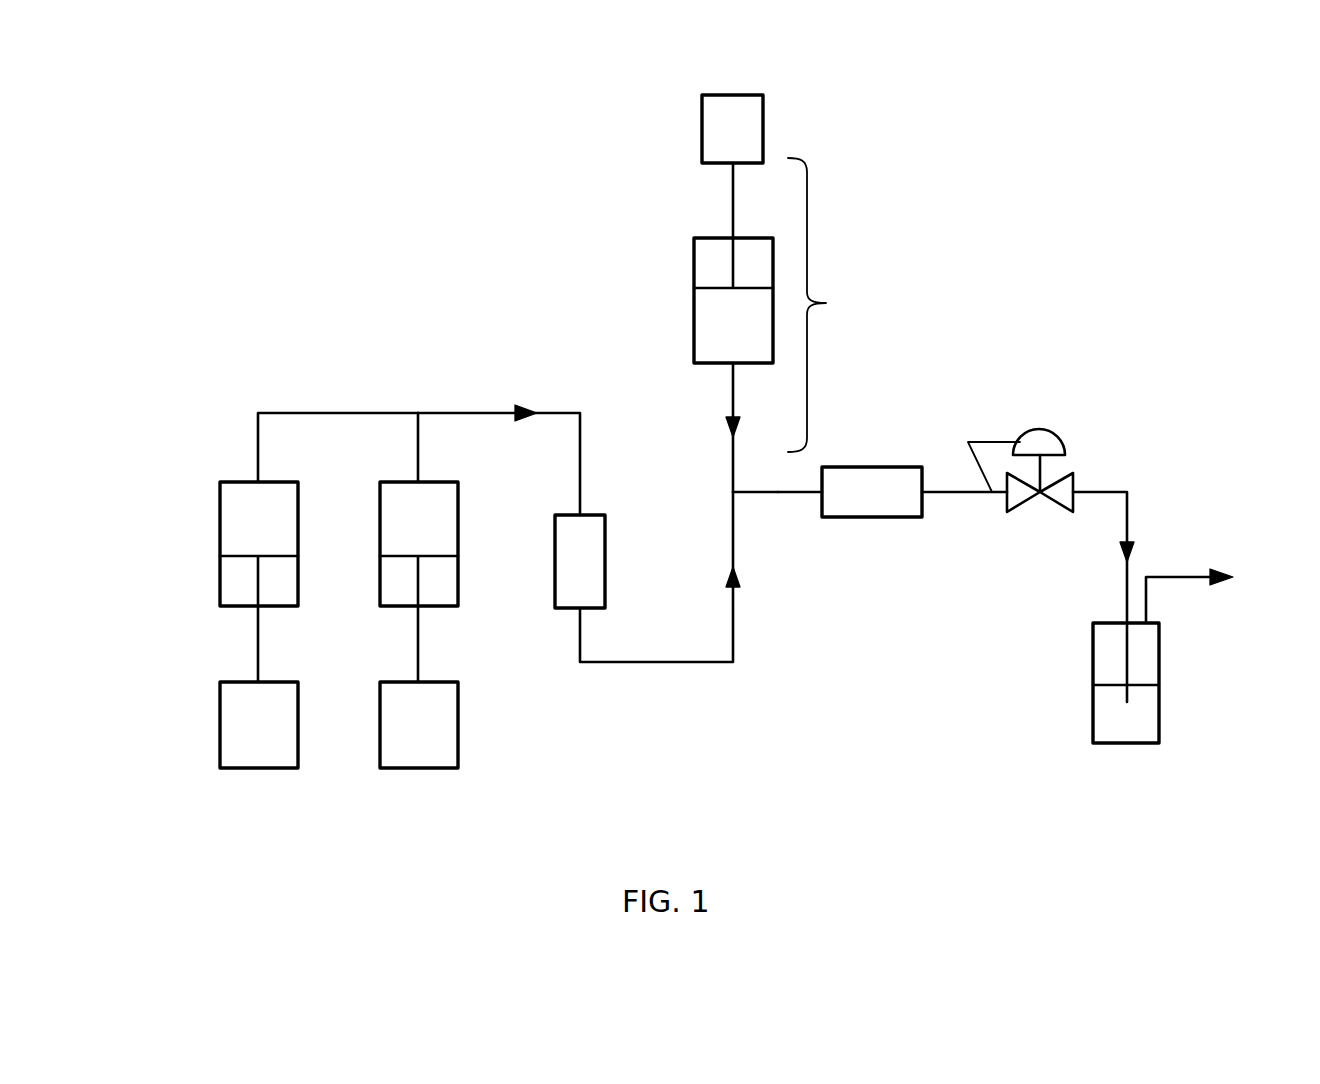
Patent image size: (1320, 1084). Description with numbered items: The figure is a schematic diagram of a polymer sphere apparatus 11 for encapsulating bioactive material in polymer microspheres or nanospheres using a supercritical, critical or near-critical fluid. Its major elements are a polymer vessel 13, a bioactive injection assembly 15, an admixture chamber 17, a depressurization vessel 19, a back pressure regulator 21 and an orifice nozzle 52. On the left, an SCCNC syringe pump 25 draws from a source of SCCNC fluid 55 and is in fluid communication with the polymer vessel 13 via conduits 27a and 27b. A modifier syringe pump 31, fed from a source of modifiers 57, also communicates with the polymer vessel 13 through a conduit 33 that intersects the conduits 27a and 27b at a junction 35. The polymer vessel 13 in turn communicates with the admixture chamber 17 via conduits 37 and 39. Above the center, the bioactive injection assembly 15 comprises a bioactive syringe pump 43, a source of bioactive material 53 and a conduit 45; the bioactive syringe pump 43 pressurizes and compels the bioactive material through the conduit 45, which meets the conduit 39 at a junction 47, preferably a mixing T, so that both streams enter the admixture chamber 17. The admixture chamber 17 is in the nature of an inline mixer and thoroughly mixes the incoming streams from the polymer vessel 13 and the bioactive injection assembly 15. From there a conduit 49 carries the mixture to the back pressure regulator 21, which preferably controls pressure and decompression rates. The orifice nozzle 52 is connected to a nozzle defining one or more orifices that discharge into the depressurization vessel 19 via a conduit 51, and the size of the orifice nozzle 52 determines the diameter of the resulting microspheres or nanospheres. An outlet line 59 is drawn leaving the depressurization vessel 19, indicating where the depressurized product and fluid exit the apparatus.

The polymer sphere apparatus 11 is at (1002, 270).
The polymer vessel 13 is at (555, 558).
The bioactive injection assembly 15 is at (831, 305).
The admixture chamber 17 is at (868, 467).
The depressurization vessel 19 is at (1093, 657).
The back pressure regulator 21 is at (1038, 440).
The SCCNC syringe pump 25 is at (220, 520).
The conduit 27a is at (333, 413).
The conduit 27b is at (553, 412).
The modifier syringe pump 31 is at (380, 581).
The conduit 33 is at (418, 449).
The junction 35 is at (418, 413).
The conduit 37 is at (655, 663).
The conduit 39 is at (779, 492).
The bioactive syringe pump 43 is at (694, 262).
The conduit 45 is at (730, 390).
The junction 47 is at (733, 490).
The conduit 49 is at (952, 492).
The conduit 51 is at (1130, 516).
The orifice nozzle 52 is at (1120, 548).
The source of bioactive material 53 is at (702, 128).
The source of SCCNC fluid 55 is at (220, 720).
The source of modifiers 57 is at (458, 722).
The outlet 59 is at (1185, 578).